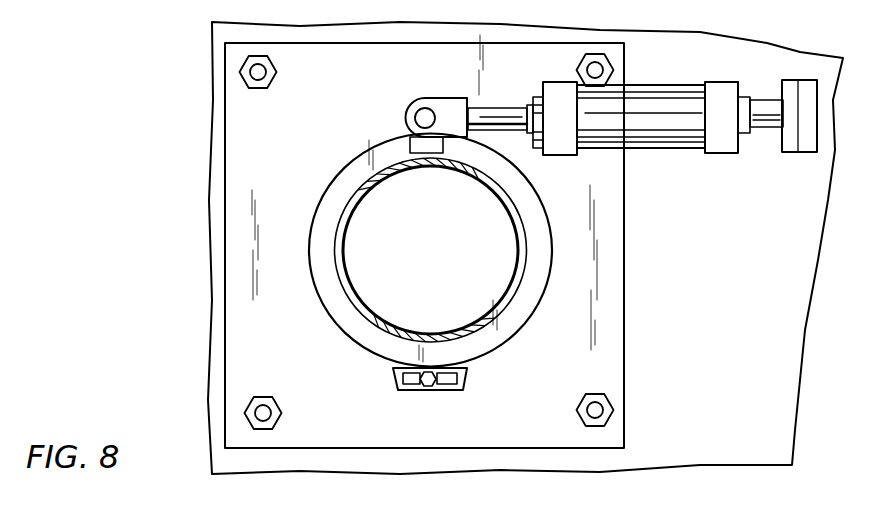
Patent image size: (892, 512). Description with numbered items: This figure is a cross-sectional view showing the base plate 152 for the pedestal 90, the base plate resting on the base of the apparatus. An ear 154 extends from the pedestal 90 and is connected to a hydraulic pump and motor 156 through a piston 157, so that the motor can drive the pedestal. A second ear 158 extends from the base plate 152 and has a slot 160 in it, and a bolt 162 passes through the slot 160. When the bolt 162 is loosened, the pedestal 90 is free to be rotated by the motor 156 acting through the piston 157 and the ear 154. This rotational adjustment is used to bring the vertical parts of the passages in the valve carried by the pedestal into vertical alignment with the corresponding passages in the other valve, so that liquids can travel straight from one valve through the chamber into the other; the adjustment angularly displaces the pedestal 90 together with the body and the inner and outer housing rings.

The pedestal 90 is at (485, 333).
The base plate 152 is at (548, 277).
The ear 154 is at (395, 144).
The hydraulic pump and motor 156 is at (643, 100).
The piston 157 is at (490, 117).
The second ear 158 is at (464, 381).
The slot 160 is at (457, 388).
The bolt 162 is at (420, 384).